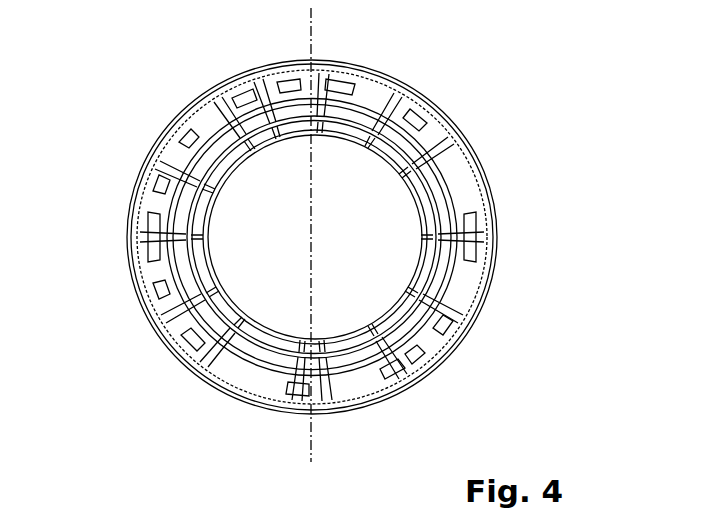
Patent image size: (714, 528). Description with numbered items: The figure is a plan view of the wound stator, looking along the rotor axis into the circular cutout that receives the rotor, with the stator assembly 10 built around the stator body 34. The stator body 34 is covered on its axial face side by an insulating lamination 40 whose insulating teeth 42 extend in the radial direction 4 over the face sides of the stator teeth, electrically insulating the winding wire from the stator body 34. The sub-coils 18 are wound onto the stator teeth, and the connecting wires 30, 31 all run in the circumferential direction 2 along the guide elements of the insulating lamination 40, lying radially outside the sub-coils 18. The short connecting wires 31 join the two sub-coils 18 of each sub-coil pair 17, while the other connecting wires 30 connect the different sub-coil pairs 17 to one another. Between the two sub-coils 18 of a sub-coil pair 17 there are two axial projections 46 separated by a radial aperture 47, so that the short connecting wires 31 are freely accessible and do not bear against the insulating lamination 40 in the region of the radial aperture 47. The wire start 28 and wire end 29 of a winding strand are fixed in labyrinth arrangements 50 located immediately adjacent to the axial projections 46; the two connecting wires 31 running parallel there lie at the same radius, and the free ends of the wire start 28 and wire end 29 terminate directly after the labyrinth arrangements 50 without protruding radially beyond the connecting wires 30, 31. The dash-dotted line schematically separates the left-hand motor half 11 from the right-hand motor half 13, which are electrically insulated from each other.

The circumferential direction 2 is at (469, 378).
The radial direction 4 is at (234, 232).
The bearing assembly 10 is at (500, 52).
The left-hand motor half 11 is at (137, 153).
The right-hand motor half 13 is at (483, 140).
The sub-coil pair 17 is at (430, 273).
The sub-coil 18 is at (397, 162).
The wire start 28 is at (356, 82).
The wire end 29 is at (437, 128).
The connecting wire 30 is at (178, 122).
The short connecting wire 31 is at (222, 92).
The stator body 34 is at (498, 243).
The insulating lamination 40 is at (322, 77).
The insulating tooth 42 is at (276, 143).
The axial projection 46 is at (185, 352).
The radial aperture 47 is at (397, 373).
The labyrinth arrangement 50 is at (224, 404).